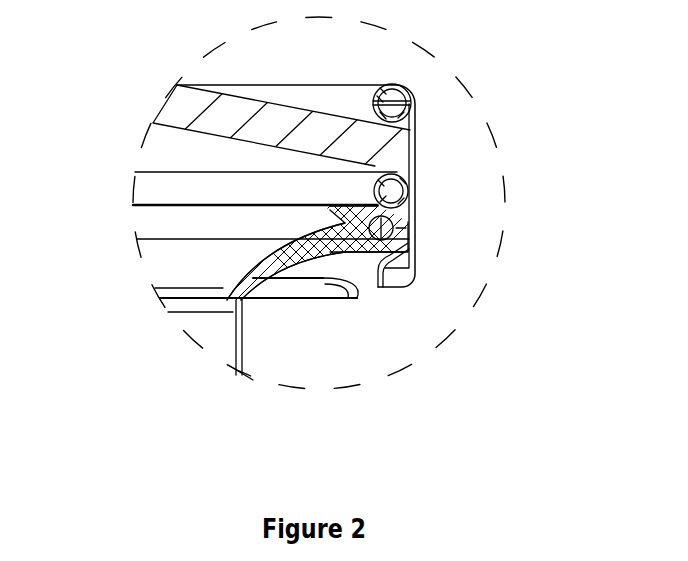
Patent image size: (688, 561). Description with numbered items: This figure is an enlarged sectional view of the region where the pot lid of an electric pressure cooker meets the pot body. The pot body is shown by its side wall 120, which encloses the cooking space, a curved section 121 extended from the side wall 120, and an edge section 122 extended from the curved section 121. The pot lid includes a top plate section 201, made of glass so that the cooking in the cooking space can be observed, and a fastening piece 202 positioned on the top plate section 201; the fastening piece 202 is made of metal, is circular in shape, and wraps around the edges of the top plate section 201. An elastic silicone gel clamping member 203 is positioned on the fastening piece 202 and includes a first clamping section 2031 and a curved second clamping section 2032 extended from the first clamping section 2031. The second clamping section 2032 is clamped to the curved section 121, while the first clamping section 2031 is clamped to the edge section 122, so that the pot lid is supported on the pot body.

The side wall 120 is at (240, 338).
The curved section 121 is at (263, 257).
The edge section 122 is at (335, 235).
The top plate section 201 is at (238, 107).
The fastening piece 202 is at (415, 167).
The elastic silicone gel clamping member 203 is at (415, 228).
The first clamping section 2031 is at (335, 235).
The second clamping section 2032 is at (263, 257).